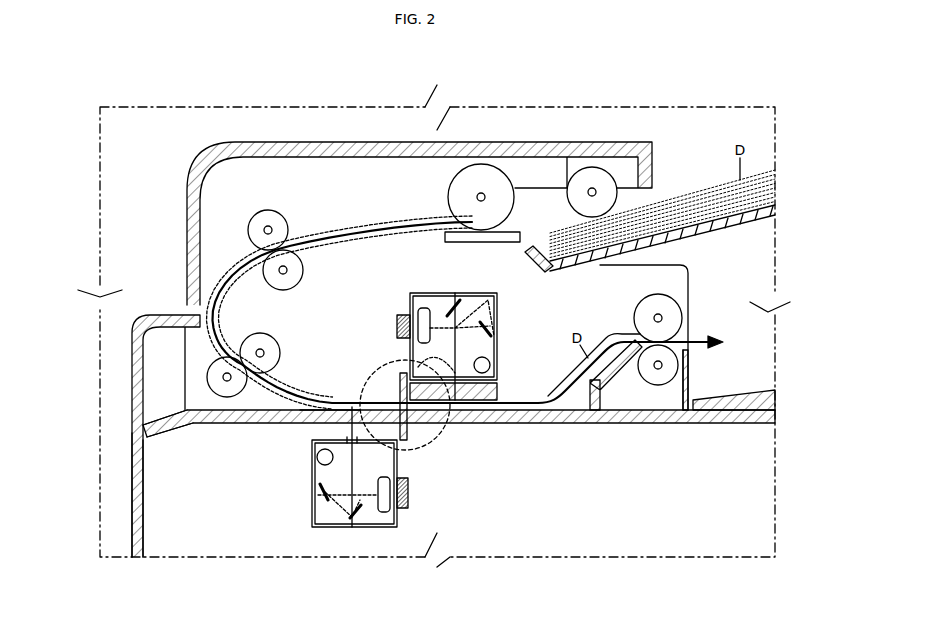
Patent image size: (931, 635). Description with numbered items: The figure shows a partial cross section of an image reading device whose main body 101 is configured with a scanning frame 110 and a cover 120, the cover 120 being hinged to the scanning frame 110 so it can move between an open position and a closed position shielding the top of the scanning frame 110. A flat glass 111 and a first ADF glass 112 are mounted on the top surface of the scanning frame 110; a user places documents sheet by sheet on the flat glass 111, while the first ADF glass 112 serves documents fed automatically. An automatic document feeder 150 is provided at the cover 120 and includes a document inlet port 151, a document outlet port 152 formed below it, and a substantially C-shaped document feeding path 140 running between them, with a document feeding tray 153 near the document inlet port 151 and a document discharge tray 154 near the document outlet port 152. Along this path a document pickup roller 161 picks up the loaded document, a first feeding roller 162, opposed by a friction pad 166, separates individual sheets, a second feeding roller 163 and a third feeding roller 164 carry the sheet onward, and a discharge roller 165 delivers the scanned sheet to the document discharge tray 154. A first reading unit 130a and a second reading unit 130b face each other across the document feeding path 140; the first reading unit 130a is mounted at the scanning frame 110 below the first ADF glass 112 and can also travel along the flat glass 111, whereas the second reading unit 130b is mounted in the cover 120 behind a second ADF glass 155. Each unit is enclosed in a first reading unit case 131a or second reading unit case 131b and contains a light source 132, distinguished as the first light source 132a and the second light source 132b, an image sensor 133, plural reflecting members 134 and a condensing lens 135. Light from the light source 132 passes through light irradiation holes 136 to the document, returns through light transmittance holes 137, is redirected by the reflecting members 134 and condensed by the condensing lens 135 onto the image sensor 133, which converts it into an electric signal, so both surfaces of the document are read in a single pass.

The main body 101 is at (58, 355).
The scanning frame 110 is at (132, 499).
The flat glass 111 is at (720, 424).
The first ADF glass 112 is at (327, 407).
The cover 120 is at (132, 391).
The first reading unit 130a is at (304, 470).
The second reading unit 130b is at (447, 405).
The first reading unit case 131a is at (310, 480).
The second reading unit case 131b is at (435, 293).
The light source 132 is at (527, 338).
The first light source 132a is at (313, 455).
The second light source 132b is at (498, 345).
The image sensor 133 is at (396, 324).
The reflecting members 134 is at (488, 303).
The condensing lens 135 is at (412, 310).
The light irradiation holes 136 is at (500, 424).
The light transmittance holes 137 is at (405, 358).
The document feeding path 140 is at (520, 402).
The automatic document feeder 150 is at (337, 141).
The document inlet port 151 is at (652, 200).
The document outlet port 152 is at (680, 345).
The document feeding tray 153 is at (714, 234).
The document discharge tray 154 is at (755, 398).
The second ADF glass 155 is at (456, 425).
The document pickup roller 161 is at (592, 167).
The first feeding roller 162 is at (481, 164).
The second feeding roller 163 is at (268, 210).
The third feeding roller 164 is at (178, 330).
The discharge roller 165 is at (645, 303).
The friction pad 166 is at (490, 244).